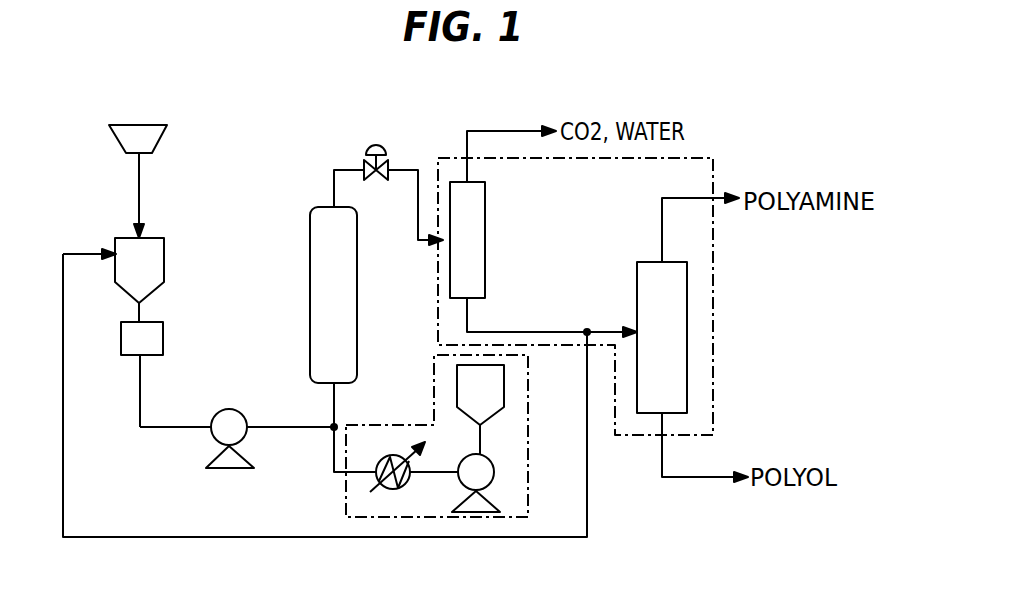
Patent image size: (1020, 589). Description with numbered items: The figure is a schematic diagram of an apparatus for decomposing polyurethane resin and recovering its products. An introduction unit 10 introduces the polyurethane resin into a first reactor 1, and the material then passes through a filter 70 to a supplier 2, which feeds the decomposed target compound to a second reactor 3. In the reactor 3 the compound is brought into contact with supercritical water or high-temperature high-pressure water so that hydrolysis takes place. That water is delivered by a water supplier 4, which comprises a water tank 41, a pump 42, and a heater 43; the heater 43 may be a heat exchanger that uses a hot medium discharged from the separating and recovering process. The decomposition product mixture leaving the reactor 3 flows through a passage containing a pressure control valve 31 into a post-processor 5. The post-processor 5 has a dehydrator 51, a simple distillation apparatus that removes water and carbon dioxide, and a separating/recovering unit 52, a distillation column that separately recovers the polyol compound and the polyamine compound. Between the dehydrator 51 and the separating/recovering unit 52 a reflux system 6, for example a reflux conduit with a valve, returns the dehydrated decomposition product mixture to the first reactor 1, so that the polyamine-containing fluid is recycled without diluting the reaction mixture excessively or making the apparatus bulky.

The reactor 1 is at (164, 249).
The supplier 2 is at (236, 414).
The reactor 3 is at (310, 280).
The water supplier 4 is at (530, 442).
The post-processor 5 is at (714, 157).
The reflux system 6 is at (590, 512).
The introduction unit 10 is at (156, 137).
The pressure control valve 31 is at (384, 145).
The water tank 41 is at (500, 396).
The pump 42 is at (490, 459).
The heater 43 is at (388, 456).
The dehydrator 51 is at (485, 253).
The separating/recovering unit 52 is at (638, 290).
The filter 70 is at (163, 339).